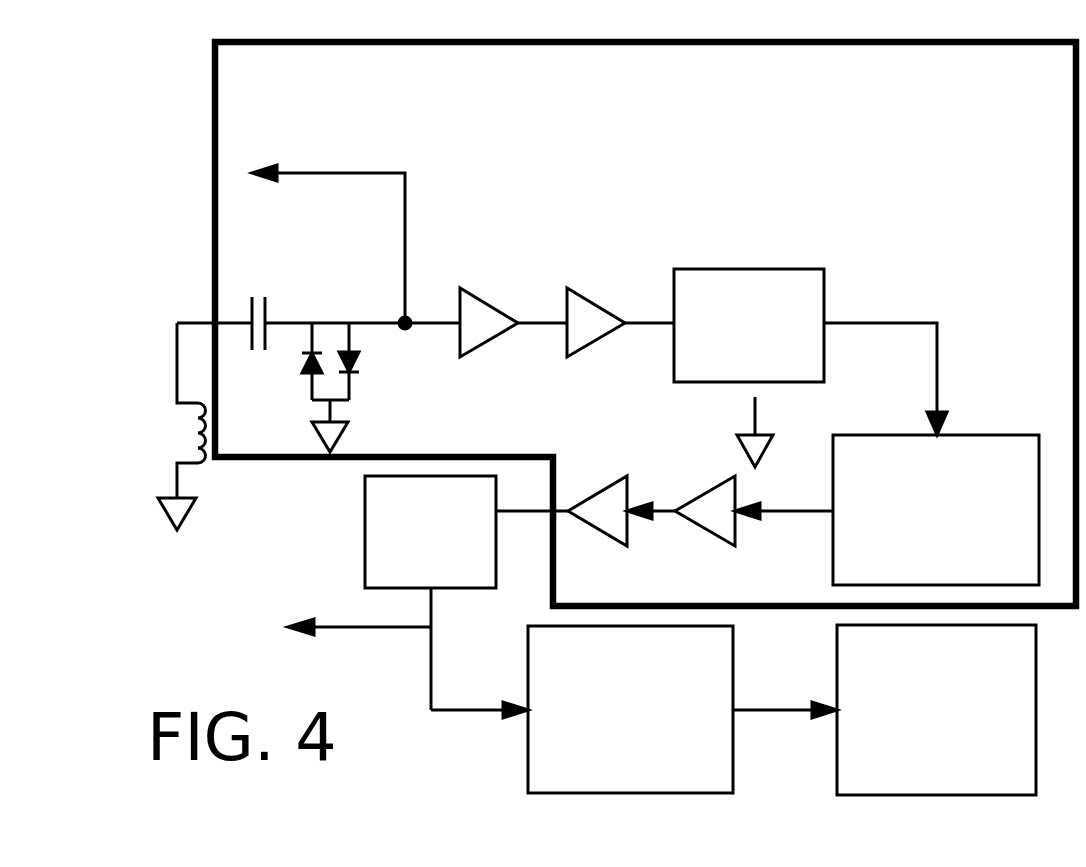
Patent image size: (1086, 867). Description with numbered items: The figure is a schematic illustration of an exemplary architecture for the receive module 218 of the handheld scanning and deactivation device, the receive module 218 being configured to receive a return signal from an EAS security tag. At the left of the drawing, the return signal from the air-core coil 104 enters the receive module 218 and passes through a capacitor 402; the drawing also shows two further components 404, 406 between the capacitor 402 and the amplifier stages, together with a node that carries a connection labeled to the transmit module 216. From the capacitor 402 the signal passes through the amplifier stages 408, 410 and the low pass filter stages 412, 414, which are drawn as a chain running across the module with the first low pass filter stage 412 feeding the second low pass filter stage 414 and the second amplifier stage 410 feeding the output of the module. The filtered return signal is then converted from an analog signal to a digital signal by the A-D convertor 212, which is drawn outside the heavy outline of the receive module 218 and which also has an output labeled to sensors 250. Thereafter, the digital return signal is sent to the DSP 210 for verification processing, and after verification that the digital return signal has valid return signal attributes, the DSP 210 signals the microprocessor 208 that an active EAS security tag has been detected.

The air-core coil 104 is at (136, 439).
The microprocessor 208 is at (918, 737).
The DSP 210 is at (611, 736).
The A-D convertor 212 is at (411, 574).
The transmit module 216 is at (319, 162).
The receive module 218 is at (814, 149).
The sensors 250 is at (214, 647).
The capacitor 402 is at (239, 289).
The diode 404 is at (259, 382).
The diode 406 is at (364, 382).
The amplifier stage 408 is at (509, 301).
The amplifier stage 410 is at (651, 484).
The low pass filter stage 412 is at (730, 366).
The low pass filter stage 414 is at (917, 537).